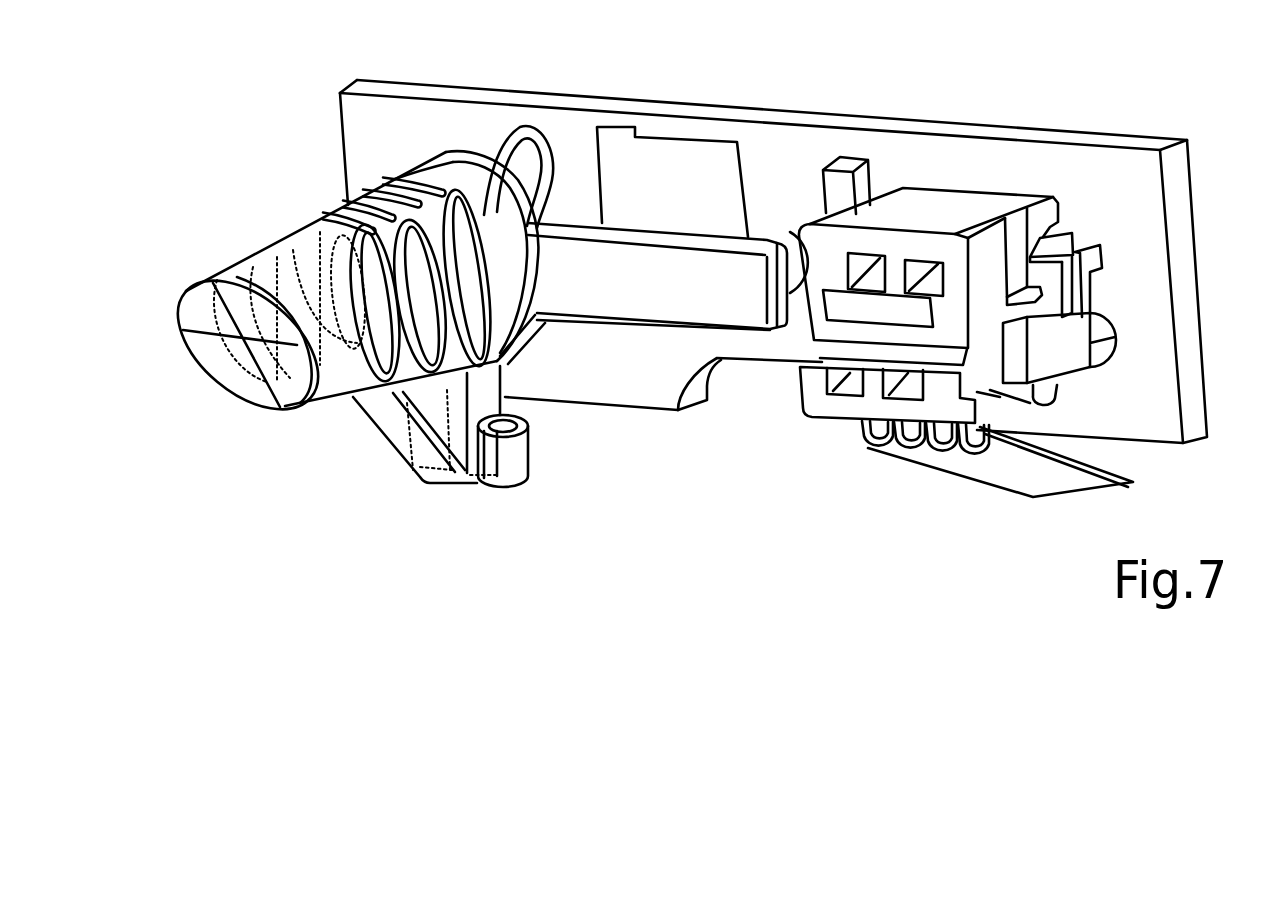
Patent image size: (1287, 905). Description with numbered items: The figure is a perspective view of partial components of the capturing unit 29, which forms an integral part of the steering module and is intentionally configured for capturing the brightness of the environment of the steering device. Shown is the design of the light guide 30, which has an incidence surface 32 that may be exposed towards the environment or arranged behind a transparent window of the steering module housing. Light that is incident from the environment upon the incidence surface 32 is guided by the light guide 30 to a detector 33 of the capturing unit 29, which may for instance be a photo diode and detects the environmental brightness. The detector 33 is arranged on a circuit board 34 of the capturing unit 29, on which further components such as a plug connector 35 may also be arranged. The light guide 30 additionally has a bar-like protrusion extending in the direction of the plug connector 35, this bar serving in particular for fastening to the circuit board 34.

The capturing unit 29 is at (603, 430).
The light guide 30 is at (295, 418).
The incidence surface 32 is at (237, 377).
The detector 33 is at (525, 146).
The circuit board 34 is at (783, 143).
The plug connector 35 is at (915, 200).